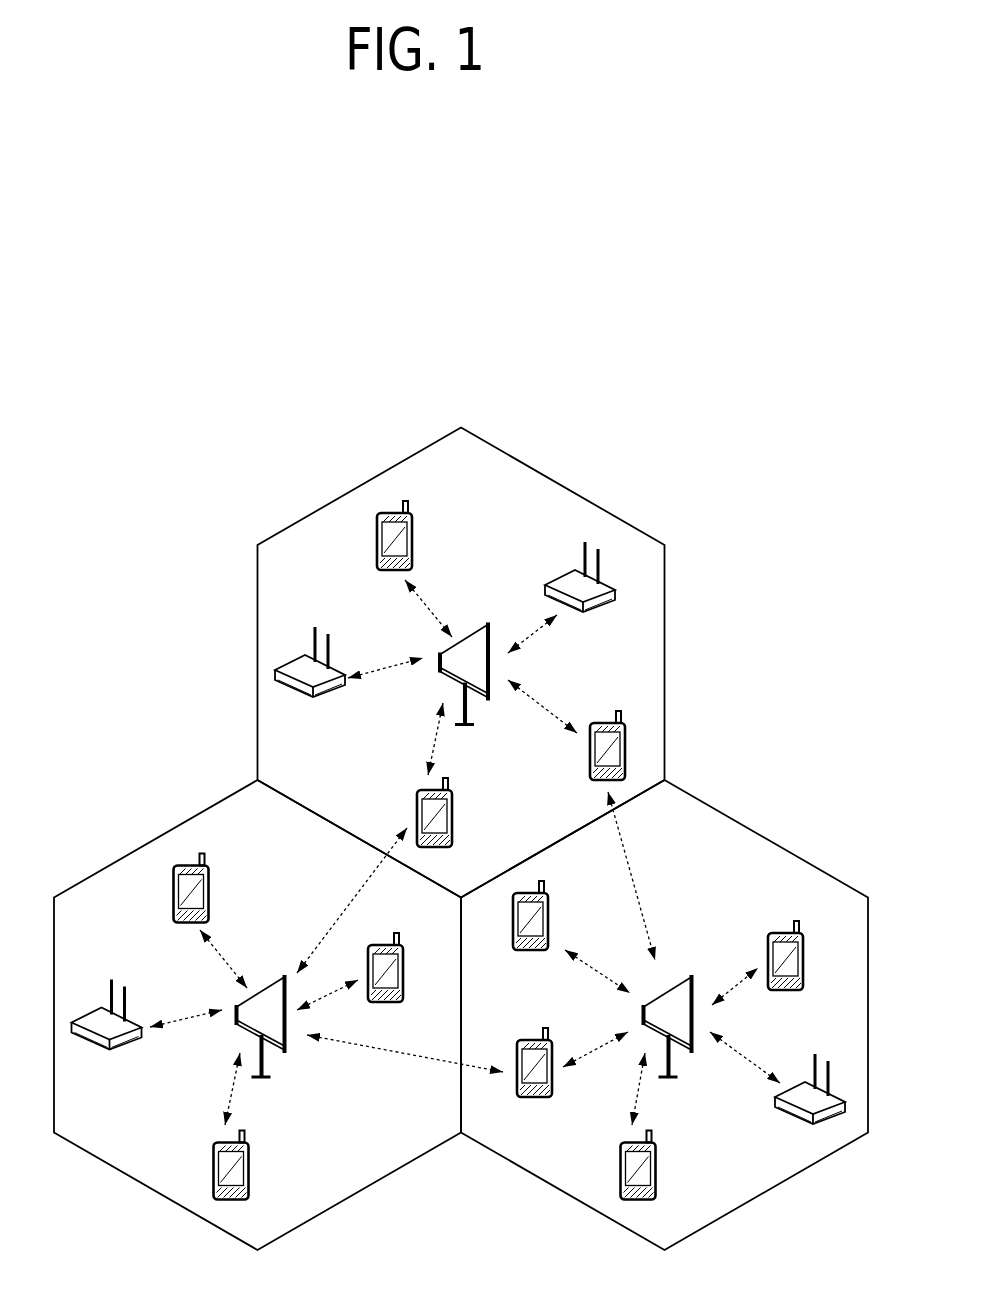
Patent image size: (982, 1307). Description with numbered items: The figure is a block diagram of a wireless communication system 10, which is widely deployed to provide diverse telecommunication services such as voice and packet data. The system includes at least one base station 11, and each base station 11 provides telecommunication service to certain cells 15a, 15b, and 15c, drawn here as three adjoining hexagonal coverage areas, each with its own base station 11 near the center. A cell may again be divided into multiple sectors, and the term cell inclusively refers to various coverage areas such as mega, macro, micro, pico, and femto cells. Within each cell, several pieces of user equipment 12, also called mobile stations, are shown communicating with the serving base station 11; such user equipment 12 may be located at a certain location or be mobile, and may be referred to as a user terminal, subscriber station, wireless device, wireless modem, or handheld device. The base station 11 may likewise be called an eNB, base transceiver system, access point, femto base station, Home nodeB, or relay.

The wireless communication system 10 is at (750, 552).
The base station 11 is at (480, 640).
The user equipment 12 is at (412, 538).
The cell 15a is at (665, 650).
The cell 15b is at (792, 853).
The cell 15c is at (132, 853).